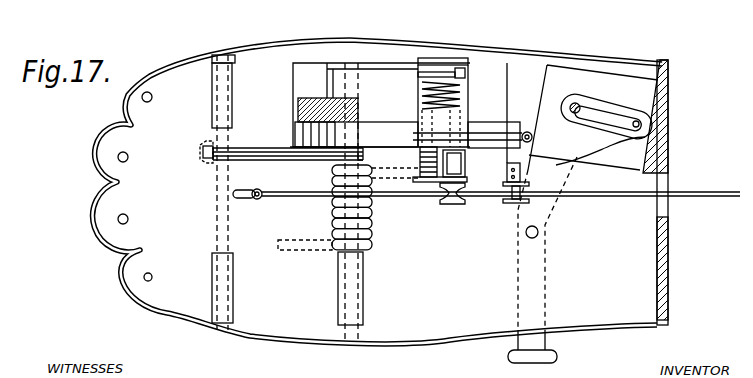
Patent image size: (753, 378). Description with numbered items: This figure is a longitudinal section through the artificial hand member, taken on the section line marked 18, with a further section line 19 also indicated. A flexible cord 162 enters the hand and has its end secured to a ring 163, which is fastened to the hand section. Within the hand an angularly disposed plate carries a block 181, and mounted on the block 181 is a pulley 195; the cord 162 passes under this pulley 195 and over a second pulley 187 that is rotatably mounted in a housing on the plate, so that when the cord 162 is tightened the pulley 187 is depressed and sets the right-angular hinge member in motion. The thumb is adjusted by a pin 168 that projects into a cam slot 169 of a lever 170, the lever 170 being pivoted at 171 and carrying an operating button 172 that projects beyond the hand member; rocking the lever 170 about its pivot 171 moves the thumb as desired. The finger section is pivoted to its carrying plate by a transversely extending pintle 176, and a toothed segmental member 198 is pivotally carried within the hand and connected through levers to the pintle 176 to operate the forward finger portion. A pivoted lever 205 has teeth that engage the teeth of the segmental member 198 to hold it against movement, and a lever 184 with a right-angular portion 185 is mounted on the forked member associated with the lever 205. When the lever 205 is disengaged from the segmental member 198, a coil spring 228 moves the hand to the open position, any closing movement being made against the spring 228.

The Fig. 18 / section line 18 is at (98, 97).
The section line 19 is at (310, 135).
The flexible cord 162 is at (690, 192).
The ring 163 is at (248, 200).
The pin 168 is at (577, 107).
The cam slot 169 is at (640, 124).
The lever 170 is at (608, 133).
The pivot 171 is at (539, 231).
The operating button 172 is at (522, 361).
The pintle 176 is at (210, 85).
The block 181 is at (517, 83).
The lever 184 is at (395, 66).
The right-angular portion 185 is at (497, 137).
The pulley 187 is at (450, 198).
The pulley 195 is at (517, 199).
The segmental member 198 is at (316, 115).
The lever 205 is at (387, 135).
The coil spring 228 is at (368, 240).